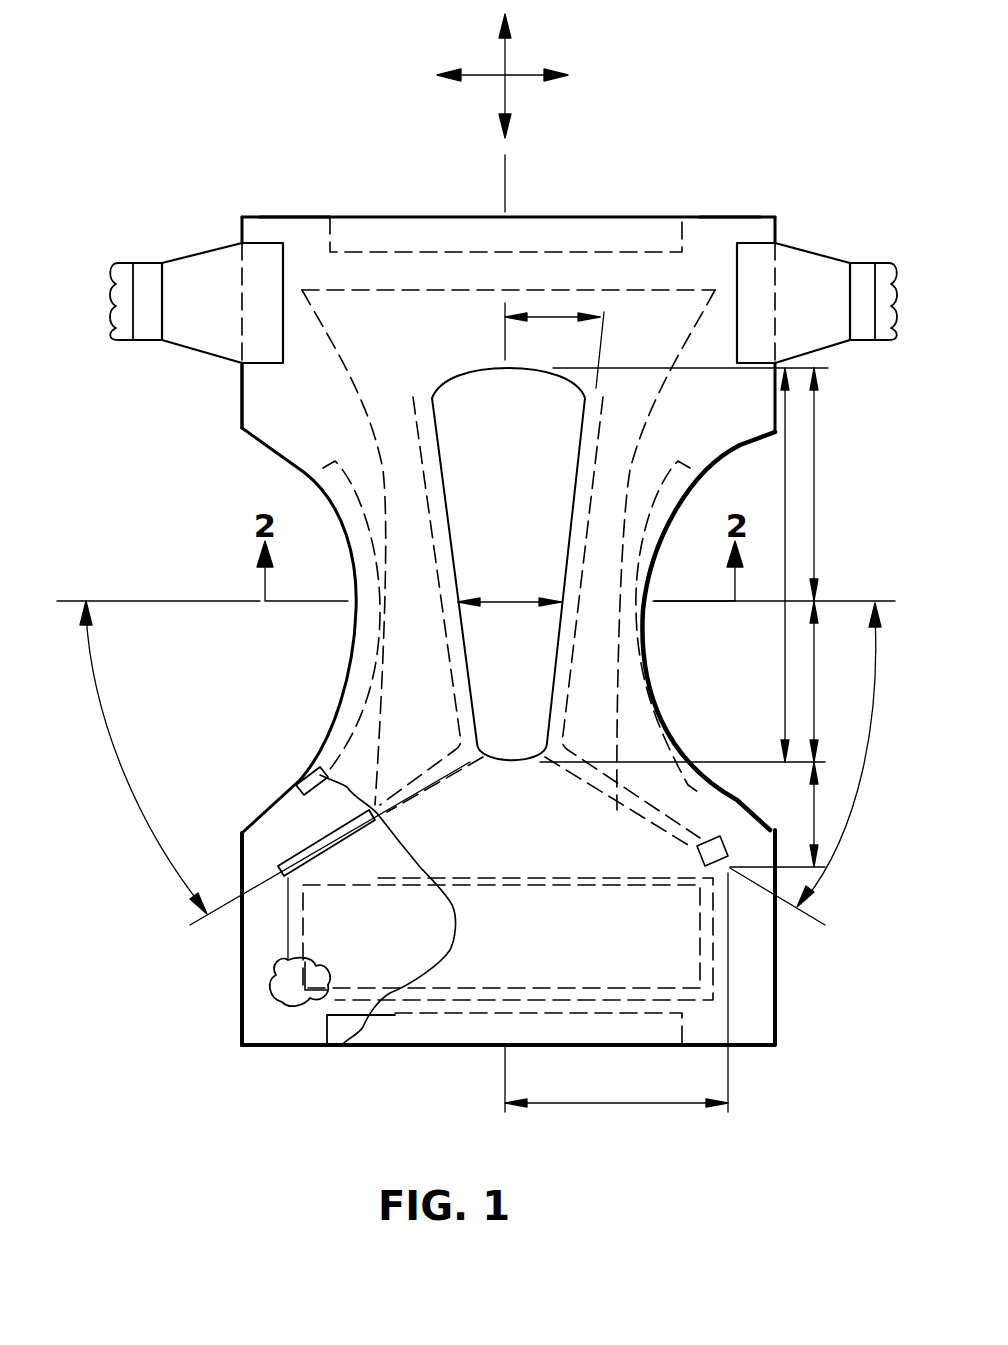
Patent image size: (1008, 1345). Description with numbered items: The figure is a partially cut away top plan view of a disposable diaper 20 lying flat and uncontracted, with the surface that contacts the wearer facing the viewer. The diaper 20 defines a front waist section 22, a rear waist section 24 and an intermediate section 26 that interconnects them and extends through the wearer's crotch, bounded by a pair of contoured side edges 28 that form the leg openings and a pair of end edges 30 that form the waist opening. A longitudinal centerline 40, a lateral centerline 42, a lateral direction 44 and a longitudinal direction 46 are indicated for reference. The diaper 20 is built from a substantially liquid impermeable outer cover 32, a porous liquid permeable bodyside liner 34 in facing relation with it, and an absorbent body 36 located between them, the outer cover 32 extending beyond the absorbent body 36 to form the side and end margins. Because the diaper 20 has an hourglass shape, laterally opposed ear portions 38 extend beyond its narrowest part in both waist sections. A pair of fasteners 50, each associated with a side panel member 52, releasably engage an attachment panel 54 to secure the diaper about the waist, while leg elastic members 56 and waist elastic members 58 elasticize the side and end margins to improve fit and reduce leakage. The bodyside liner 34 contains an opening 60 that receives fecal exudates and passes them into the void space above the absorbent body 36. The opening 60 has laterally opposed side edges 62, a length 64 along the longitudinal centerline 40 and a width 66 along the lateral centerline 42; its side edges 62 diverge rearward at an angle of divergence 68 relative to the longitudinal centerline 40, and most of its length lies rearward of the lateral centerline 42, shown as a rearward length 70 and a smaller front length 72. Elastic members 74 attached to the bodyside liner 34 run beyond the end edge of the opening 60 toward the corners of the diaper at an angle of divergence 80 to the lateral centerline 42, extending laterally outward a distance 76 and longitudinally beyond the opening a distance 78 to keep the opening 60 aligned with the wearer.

The disposable diaper 20 is at (204, 118).
The front waist section 22 is at (155, 1022).
The rear waist section 24 is at (172, 398).
The intermediate section 26 is at (245, 672).
The side edges 28 is at (242, 407).
The end edges 30 is at (276, 213).
The outer cover 32 is at (258, 1033).
The bodyside liner 34 is at (353, 1030).
The absorbent body 36 is at (288, 942).
The ear portions 38 is at (741, 185).
The longitudinal centerline 40 is at (507, 181).
The lateral centerline 42 is at (227, 600).
The lateral direction 44 is at (533, 72).
The longitudinal direction 46 is at (500, 53).
The fasteners 50 is at (860, 262).
The side panel member 52 is at (797, 243).
The attachment panel 54 is at (283, 967).
The leg elastic members 56 is at (297, 790).
The waist elastic members 58 is at (327, 1032).
The opening 60 is at (452, 378).
The side edges of the opening 62 is at (440, 450).
The length of the opening 64 is at (787, 468).
The width of the opening 66 is at (503, 598).
The angle of divergence 68 is at (538, 319).
The length rearward of the lateral centerline 70 is at (817, 521).
The length on the front waist side 72 is at (813, 707).
The elastic member 74 is at (290, 855).
The lateral distance 76 is at (612, 1112).
The longitudinal distance 78 is at (810, 813).
The angle of divergence of the elastic members 80 is at (108, 748).